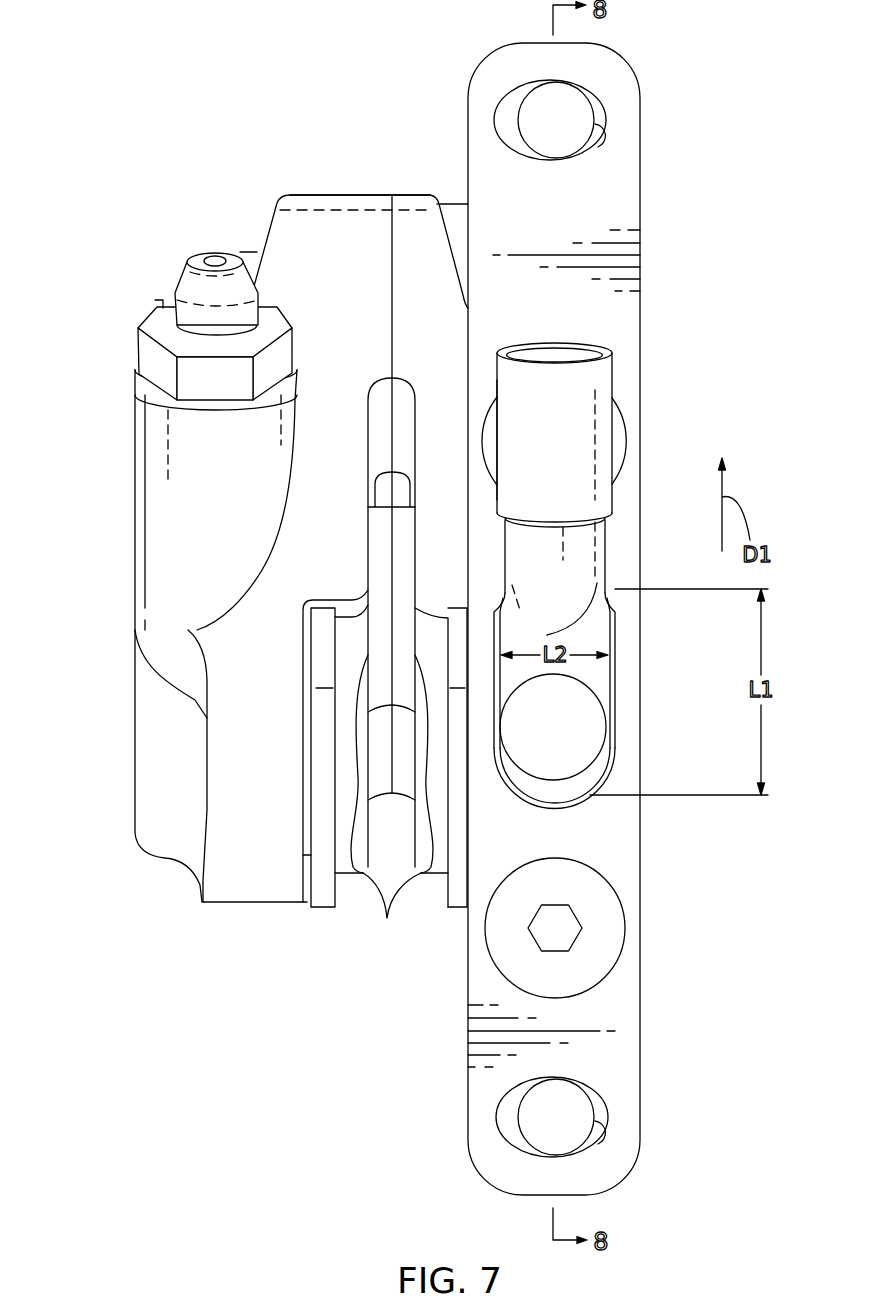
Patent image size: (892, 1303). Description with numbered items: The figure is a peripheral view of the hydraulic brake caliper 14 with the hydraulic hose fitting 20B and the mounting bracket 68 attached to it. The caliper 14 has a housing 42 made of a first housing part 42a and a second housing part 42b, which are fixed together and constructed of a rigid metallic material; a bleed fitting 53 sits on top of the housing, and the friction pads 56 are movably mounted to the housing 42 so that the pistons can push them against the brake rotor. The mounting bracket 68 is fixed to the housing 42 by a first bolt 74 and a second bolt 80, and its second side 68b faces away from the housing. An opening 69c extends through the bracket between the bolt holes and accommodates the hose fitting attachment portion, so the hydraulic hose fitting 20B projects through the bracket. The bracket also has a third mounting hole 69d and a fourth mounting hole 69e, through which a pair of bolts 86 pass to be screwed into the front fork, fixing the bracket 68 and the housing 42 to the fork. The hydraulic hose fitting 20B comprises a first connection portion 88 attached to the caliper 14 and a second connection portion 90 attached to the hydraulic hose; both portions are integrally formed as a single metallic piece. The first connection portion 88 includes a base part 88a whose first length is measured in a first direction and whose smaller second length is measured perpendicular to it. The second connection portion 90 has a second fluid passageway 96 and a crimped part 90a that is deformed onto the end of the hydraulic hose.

The hydraulic brake caliper 14 is at (155, 152).
The housing 42 is at (442, 133).
The first housing part 42a is at (337, 195).
The second housing part 42b is at (412, 195).
The bleed fitting 53 is at (185, 275).
The friction pads 56 is at (387, 918).
The mounting bracket 68 is at (650, 1020).
The second side 68b is at (483, 985).
The opening 69c is at (618, 722).
The third mounting hole 69d is at (598, 143).
The fourth mounting hole 69e is at (598, 1140).
The first bolt 74 is at (622, 450).
The second bolt 80 is at (600, 880).
The bolts 86 is at (565, 112).
The first connection portion 88 is at (545, 807).
The base part 88a is at (563, 790).
The second connection portion 90 is at (627, 377).
The crimped part 90a is at (530, 392).
The second fluid passageway 96 is at (565, 350).
The hydraulic hose fitting 20B is at (629, 668).